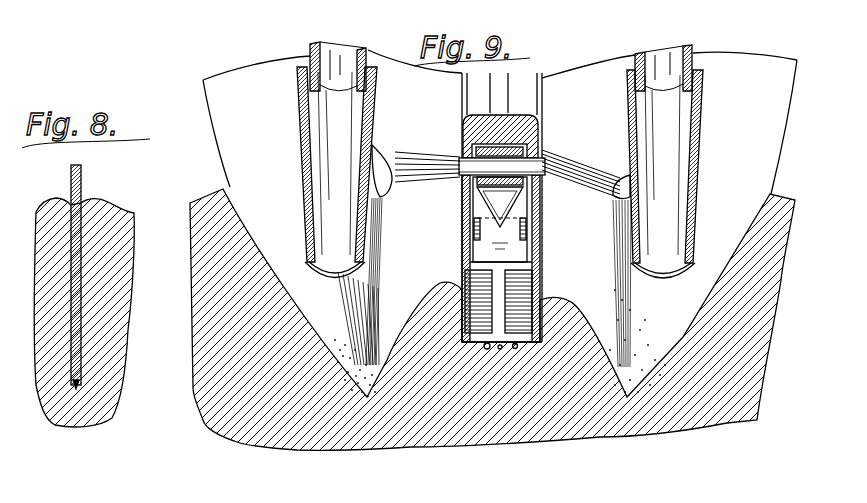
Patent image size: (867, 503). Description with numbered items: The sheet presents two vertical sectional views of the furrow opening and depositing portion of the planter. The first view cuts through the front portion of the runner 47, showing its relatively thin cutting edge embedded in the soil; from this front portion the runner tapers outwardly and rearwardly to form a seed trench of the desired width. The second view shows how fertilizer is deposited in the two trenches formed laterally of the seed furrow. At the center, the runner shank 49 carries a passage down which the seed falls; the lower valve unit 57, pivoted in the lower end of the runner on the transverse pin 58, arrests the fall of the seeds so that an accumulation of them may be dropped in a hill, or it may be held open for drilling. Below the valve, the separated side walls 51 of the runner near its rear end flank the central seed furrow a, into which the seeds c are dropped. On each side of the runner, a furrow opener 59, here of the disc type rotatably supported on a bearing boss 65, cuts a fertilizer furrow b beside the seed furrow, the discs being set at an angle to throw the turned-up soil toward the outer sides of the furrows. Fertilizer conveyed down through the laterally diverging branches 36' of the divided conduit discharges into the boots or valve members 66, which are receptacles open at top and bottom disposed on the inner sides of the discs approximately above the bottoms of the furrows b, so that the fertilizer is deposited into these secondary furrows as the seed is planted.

In FIG. 8, the runner 47 is at (70, 182).
In FIG. 9, the laterally diverging branch of the divided conduit 36' is at (496, 77).
In FIG. 9, the runner shank 49 is at (540, 85).
In FIG. 9, the side walls of the runner 51 is at (462, 278).
In FIG. 9, the lower valve unit 57 is at (462, 230).
In FIG. 9, the transverse pin 58 is at (546, 180).
In FIG. 9, the furrow opener 59 is at (223, 162).
In FIG. 9, the bearing boss 65 is at (413, 183).
In FIG. 9, the boot or valve member 66 is at (302, 183).
In FIG. 9, the seed furrow a is at (443, 347).
In FIG. 9, the fertilizer furrow b is at (367, 397).
In FIG. 9, the seeds c is at (515, 348).